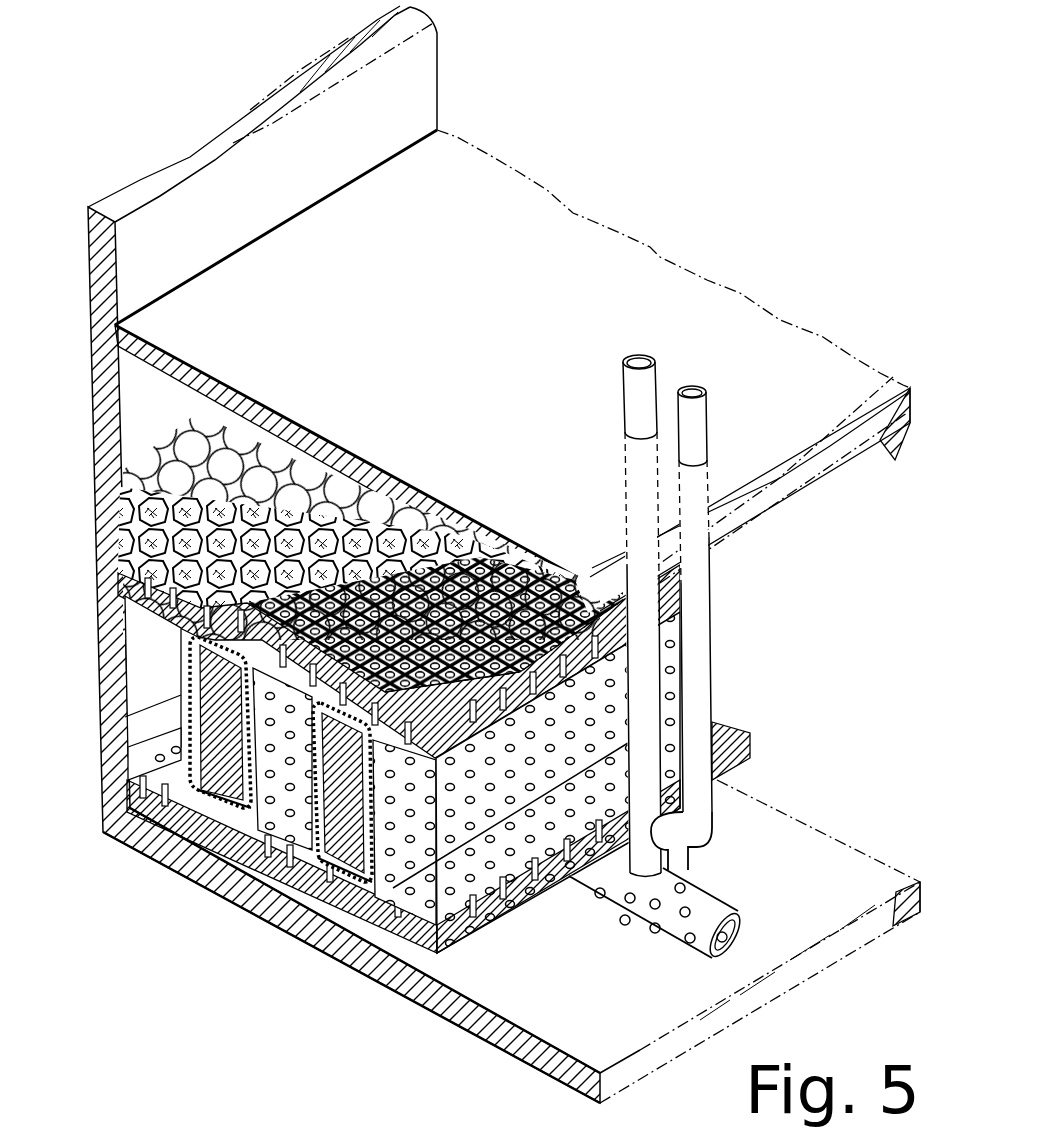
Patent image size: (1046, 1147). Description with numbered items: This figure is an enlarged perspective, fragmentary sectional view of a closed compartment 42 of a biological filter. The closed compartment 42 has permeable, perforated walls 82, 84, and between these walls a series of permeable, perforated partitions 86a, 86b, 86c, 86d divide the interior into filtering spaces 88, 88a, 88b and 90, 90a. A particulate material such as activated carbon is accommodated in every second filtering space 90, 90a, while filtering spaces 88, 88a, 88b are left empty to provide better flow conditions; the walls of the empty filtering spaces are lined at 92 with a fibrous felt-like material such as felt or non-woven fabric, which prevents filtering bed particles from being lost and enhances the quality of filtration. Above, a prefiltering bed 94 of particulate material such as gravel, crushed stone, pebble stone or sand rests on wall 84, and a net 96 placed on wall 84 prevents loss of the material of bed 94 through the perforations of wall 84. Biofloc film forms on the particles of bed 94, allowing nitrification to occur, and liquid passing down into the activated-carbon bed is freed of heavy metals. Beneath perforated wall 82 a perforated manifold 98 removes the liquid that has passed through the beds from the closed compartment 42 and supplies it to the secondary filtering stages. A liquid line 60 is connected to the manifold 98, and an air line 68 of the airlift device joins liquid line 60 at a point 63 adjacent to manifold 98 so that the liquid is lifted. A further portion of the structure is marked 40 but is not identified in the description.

The housing wall 40 is at (84, 688).
The closed compartment 42 is at (157, 412).
The liquid line 60 is at (640, 347).
The connection point 63 is at (689, 868).
The air line 68 is at (690, 392).
The perforated wall 82 is at (432, 955).
The perforated wall 84 is at (133, 566).
The perforated partition 86a is at (200, 737).
The perforated partition 86b is at (270, 822).
The perforated partition 86c is at (288, 800).
The perforated partition 86d is at (450, 800).
The filtering space 88 is at (140, 628).
The filtering space 88a is at (277, 818).
The filtering space 88b is at (405, 897).
The filtering space 90 is at (181, 698).
The filtering space 90a is at (343, 820).
The fibrous felt-like lining 92 is at (175, 810).
The prefiltering bed 94 is at (303, 513).
The net 96 is at (485, 567).
The perforated manifold 98 is at (730, 938).